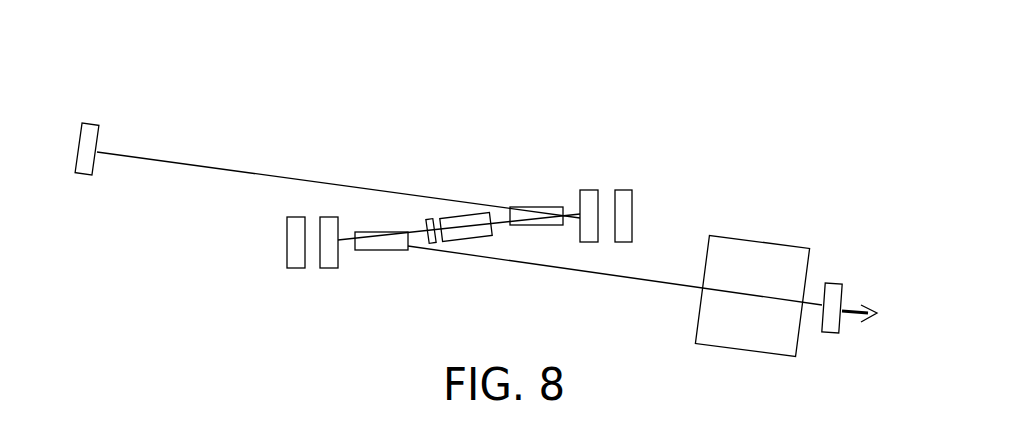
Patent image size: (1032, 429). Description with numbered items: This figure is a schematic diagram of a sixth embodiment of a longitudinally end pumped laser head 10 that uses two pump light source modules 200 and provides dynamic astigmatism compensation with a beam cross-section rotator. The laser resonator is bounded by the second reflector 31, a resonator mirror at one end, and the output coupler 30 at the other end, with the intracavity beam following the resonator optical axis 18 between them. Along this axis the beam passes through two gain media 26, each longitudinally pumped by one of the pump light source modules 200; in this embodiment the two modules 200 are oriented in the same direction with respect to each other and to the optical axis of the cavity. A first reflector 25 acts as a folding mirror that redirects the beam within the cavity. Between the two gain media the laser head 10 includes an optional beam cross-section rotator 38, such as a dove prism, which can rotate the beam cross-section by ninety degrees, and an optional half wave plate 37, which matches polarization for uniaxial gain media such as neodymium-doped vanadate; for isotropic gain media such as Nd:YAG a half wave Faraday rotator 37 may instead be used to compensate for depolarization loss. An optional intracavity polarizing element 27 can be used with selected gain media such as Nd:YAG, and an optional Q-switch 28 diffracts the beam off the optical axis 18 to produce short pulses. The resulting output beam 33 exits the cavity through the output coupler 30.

The laser head 10 is at (513, 121).
The resonator optical axis 18 is at (338, 172).
The first reflector 25 is at (449, 219).
The gain medium 26 is at (416, 246).
The intracavity polarizing element 27 is at (613, 265).
The Q-switch 28 is at (752, 269).
The output coupler 30 is at (811, 258).
The second reflector 31 is at (117, 178).
The output beam 33 is at (828, 232).
The half wave plate 37 is at (370, 184).
The beam cross-section rotator 38 is at (443, 183).
The pump light source module 200 is at (436, 219).